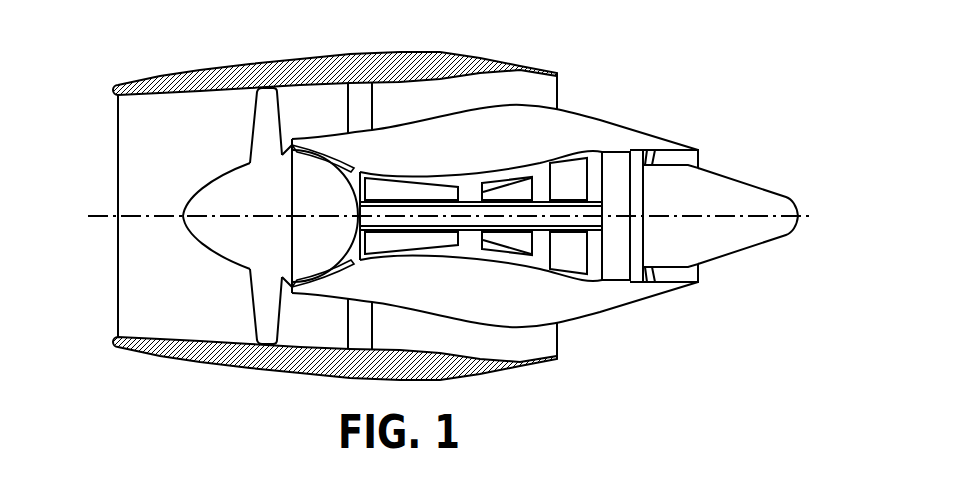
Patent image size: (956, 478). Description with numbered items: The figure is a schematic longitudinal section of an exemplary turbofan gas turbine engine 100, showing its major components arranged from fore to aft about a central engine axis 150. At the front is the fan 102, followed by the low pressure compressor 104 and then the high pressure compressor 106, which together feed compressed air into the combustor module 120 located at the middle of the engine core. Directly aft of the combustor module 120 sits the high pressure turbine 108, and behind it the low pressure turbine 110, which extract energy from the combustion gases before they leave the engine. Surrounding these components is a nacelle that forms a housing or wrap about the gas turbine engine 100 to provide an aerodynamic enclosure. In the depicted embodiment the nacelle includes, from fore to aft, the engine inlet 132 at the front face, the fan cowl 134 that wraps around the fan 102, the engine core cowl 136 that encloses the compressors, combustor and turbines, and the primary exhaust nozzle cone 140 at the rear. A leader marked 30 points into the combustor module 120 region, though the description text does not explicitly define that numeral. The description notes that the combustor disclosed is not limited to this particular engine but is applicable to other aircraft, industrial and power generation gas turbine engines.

The turbofan gas turbine engine 100 is at (660, 71).
The fan 102 is at (262, 128).
The low pressure compressor 104 is at (337, 277).
The high pressure compressor 106 is at (425, 193).
The high pressure turbine 108 is at (570, 175).
The low pressure turbine 110 is at (616, 177).
The combustor module 120 is at (500, 175).
The combustor liner 30 is at (512, 187).
The engine inlet 132 is at (118, 163).
The fan cowl 134 is at (263, 56).
The engine core cowl 136 is at (528, 105).
The primary exhaust nozzle cone 140 is at (760, 186).
The central engine axis 150 is at (133, 216).